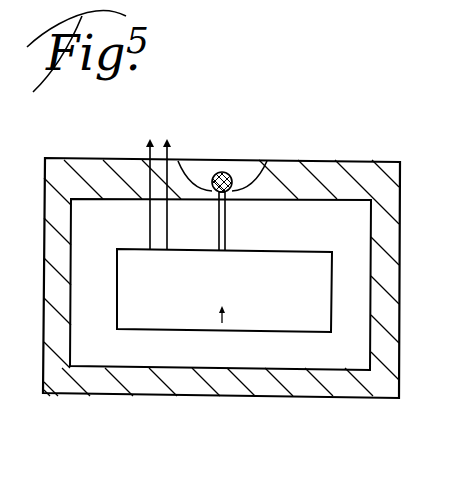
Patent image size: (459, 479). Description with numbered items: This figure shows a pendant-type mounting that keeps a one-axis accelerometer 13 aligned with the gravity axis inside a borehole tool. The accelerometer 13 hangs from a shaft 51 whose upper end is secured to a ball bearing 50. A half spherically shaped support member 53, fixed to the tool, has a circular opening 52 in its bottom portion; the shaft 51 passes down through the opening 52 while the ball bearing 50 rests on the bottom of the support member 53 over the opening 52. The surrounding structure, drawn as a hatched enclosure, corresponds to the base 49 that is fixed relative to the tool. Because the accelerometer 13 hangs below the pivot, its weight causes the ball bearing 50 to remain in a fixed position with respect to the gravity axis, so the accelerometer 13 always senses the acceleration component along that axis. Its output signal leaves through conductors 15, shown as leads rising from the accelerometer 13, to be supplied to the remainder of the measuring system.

The one-axis accelerometer 13 is at (303, 250).
The conductors 15 is at (152, 210).
The base 49 is at (215, 397).
The ball bearing 50 is at (227, 174).
The shaft 51 is at (225, 218).
The circular opening 52 is at (213, 193).
The half spherically shaped support member 53 is at (212, 187).